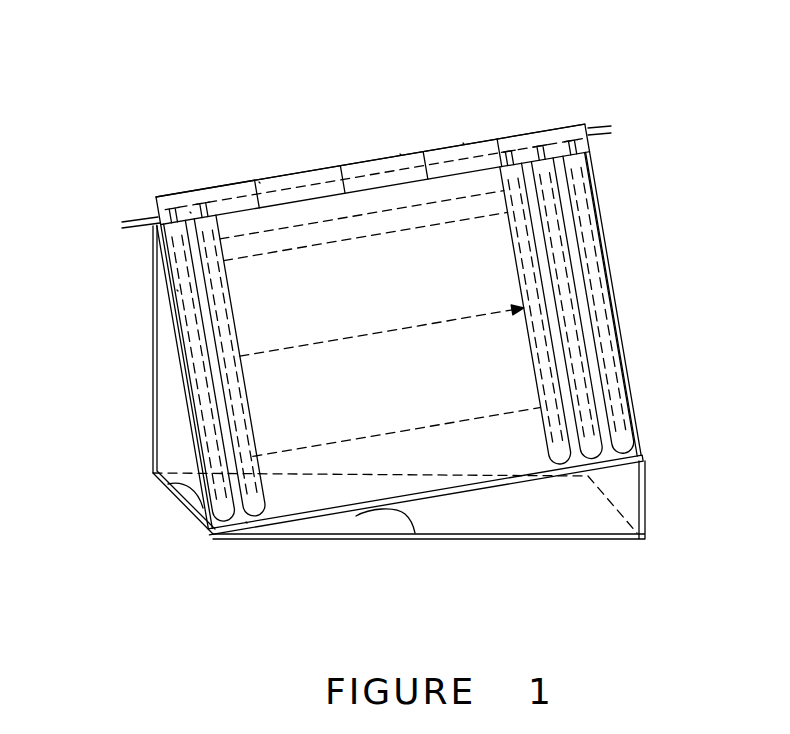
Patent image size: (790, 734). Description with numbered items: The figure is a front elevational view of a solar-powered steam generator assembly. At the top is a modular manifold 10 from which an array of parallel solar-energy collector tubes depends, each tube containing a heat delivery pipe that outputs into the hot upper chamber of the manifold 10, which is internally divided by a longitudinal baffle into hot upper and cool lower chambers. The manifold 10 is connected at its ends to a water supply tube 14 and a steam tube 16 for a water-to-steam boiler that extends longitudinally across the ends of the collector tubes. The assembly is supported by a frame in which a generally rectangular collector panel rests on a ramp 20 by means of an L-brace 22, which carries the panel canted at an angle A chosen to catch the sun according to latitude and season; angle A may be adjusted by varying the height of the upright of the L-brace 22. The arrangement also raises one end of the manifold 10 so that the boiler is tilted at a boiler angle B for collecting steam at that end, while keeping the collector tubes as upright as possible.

The modular manifold 10 is at (473, 137).
The water supply tube 14 is at (130, 219).
The steam tube 16 is at (600, 128).
The ramp 20 is at (657, 512).
The L-brace 22 is at (150, 403).
The angle A is at (172, 489).
The boiler angle B is at (406, 516).